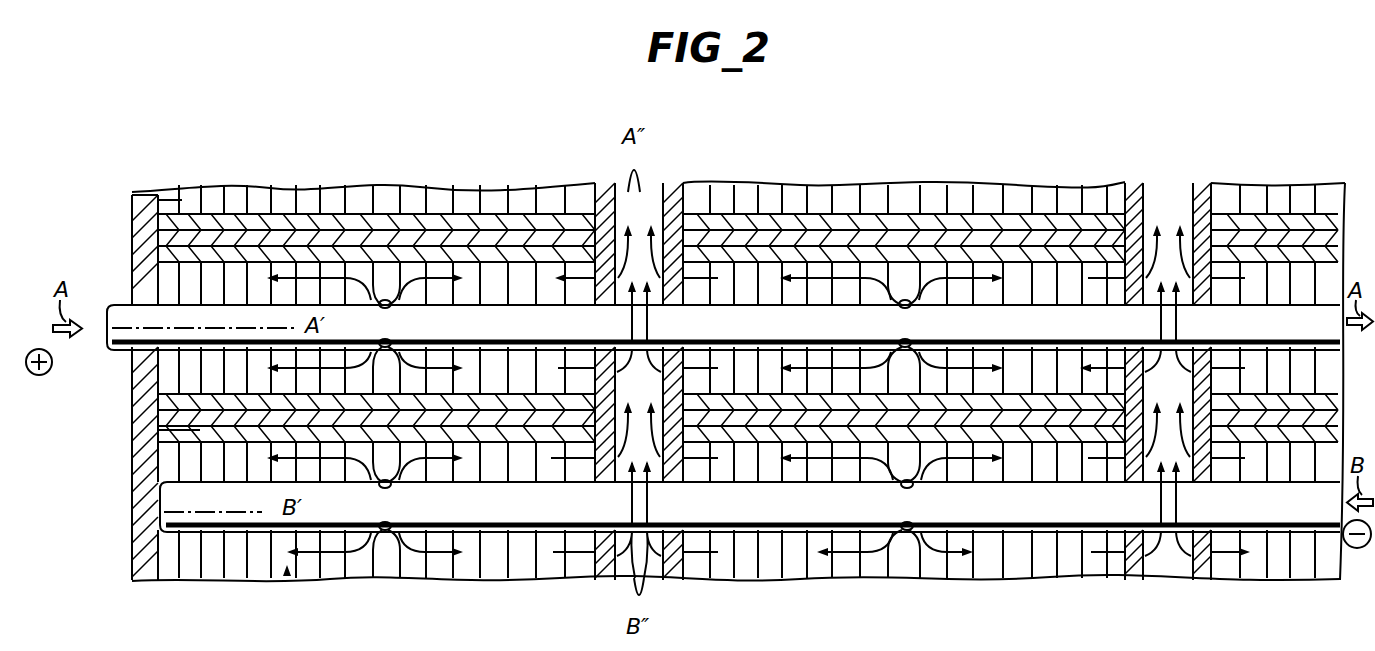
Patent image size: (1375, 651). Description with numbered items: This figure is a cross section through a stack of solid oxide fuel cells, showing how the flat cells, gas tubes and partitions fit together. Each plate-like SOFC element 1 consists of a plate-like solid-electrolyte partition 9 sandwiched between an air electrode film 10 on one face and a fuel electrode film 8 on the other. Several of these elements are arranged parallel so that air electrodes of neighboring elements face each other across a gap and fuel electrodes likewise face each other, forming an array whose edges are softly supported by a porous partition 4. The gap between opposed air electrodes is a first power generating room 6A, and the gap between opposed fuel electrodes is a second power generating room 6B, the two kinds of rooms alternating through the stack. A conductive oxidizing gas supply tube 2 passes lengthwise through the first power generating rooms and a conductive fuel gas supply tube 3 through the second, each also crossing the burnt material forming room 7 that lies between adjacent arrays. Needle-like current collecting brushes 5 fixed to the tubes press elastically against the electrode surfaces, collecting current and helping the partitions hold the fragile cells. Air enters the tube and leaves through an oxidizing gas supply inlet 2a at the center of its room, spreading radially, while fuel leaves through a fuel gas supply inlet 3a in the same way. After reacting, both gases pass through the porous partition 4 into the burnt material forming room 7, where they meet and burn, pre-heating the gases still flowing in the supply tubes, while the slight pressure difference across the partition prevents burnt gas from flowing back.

The plate-like SOFC element 1 is at (438, 203).
The conductive oxidizing gas supply tube 2 is at (150, 352).
The oxidizing gas supply inlet 2a is at (394, 341).
The conductive fuel gas supply tube 3 is at (190, 560).
The fuel gas supply inlet 3a is at (386, 525).
The porous partition 4 is at (143, 195).
The needle-like current collecting brush 5 is at (296, 192).
The first power generating room 6A is at (170, 290).
The second power generating room 6B is at (370, 198).
The burnt material forming room 7 is at (651, 192).
The fuel electrode film 8 is at (500, 230).
The plate-like solid-electrolyte partition 9 is at (468, 238).
The air electrode film 10 is at (528, 255).